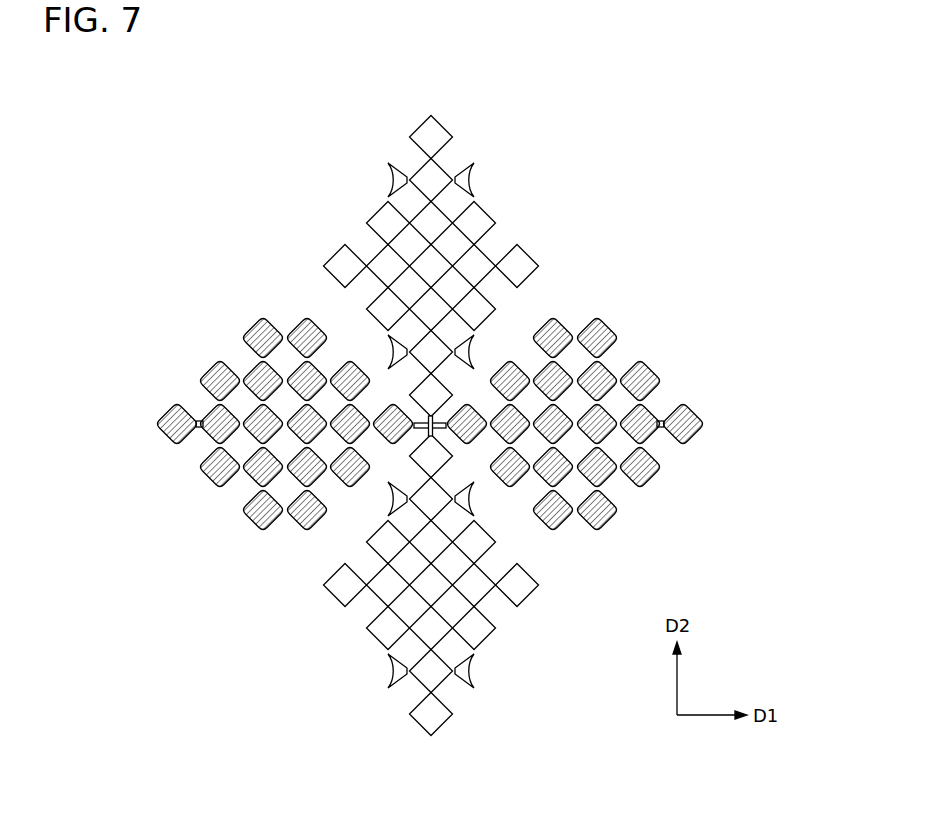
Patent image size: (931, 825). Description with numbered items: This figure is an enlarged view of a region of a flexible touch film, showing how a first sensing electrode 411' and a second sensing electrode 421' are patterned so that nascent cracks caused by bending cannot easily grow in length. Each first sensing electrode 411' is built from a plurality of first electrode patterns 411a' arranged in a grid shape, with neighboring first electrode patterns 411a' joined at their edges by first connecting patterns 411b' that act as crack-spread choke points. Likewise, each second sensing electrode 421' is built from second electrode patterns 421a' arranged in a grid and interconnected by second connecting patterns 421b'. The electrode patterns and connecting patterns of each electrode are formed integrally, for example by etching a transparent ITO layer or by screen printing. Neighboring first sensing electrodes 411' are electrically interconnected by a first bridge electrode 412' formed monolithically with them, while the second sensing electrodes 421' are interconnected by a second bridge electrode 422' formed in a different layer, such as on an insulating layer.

The second sensing electrode 421' is at (410, 426).
The second electrode pattern 421a' is at (420, 426).
The second connecting pattern 421b' is at (463, 424).
The first sensing electrode 411' is at (430, 401).
The first electrode pattern 411a' is at (430, 437).
The first connecting pattern 411b' is at (431, 389).
The first bridge electrode 412' is at (359, 502).
The second bridge electrode 422' is at (517, 341).